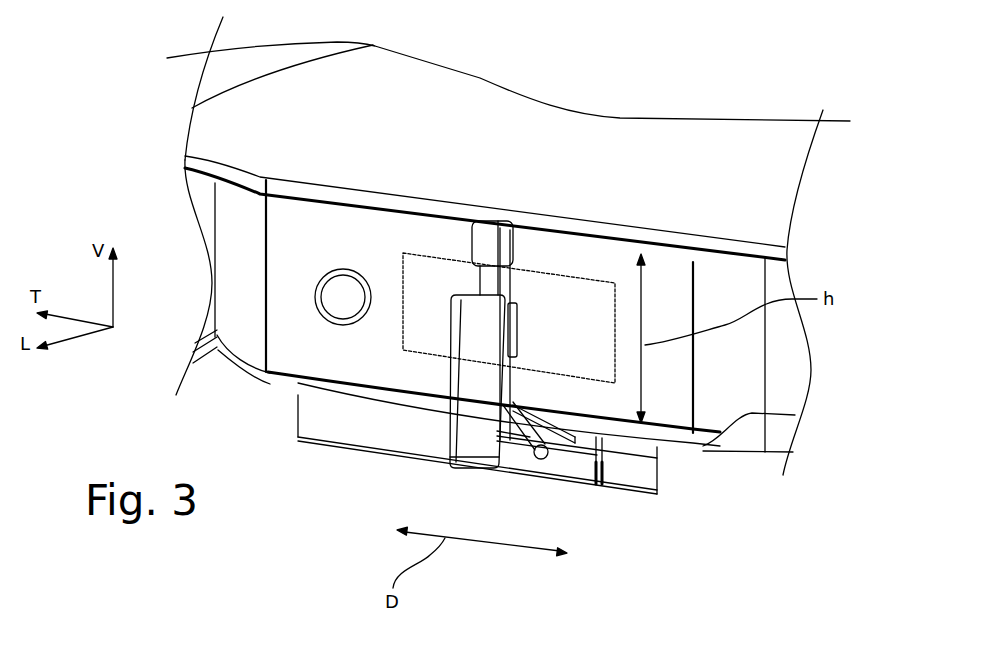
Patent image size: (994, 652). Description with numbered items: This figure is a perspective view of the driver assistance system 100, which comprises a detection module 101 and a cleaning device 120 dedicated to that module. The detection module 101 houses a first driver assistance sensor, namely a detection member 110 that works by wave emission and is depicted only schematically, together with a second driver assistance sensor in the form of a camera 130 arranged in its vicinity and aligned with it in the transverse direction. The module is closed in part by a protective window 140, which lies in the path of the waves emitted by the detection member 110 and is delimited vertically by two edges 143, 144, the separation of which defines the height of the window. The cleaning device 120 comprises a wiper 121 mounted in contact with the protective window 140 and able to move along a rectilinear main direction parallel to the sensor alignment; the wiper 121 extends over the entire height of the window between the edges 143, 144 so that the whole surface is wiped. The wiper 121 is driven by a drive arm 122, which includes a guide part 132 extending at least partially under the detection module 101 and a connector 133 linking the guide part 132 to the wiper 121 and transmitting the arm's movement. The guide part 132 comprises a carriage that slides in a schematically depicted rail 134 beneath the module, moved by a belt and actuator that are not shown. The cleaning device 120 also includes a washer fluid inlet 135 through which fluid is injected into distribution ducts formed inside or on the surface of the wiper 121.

The driver assistance system 100 is at (152, 182).
The detection module 101 is at (462, 92).
The detection member 110 is at (577, 290).
The wiper 121 is at (485, 276).
The edge 143 is at (648, 250).
The edge 144 is at (663, 430).
The camera 130 is at (333, 303).
The connector 133 is at (467, 328).
The protective window 140 is at (298, 402).
The cleaning device 120 is at (427, 423).
The drive arm 122 is at (447, 433).
The washer fluid inlet 135 is at (540, 459).
The guide part 132 is at (572, 447).
The rail 134 is at (638, 477).